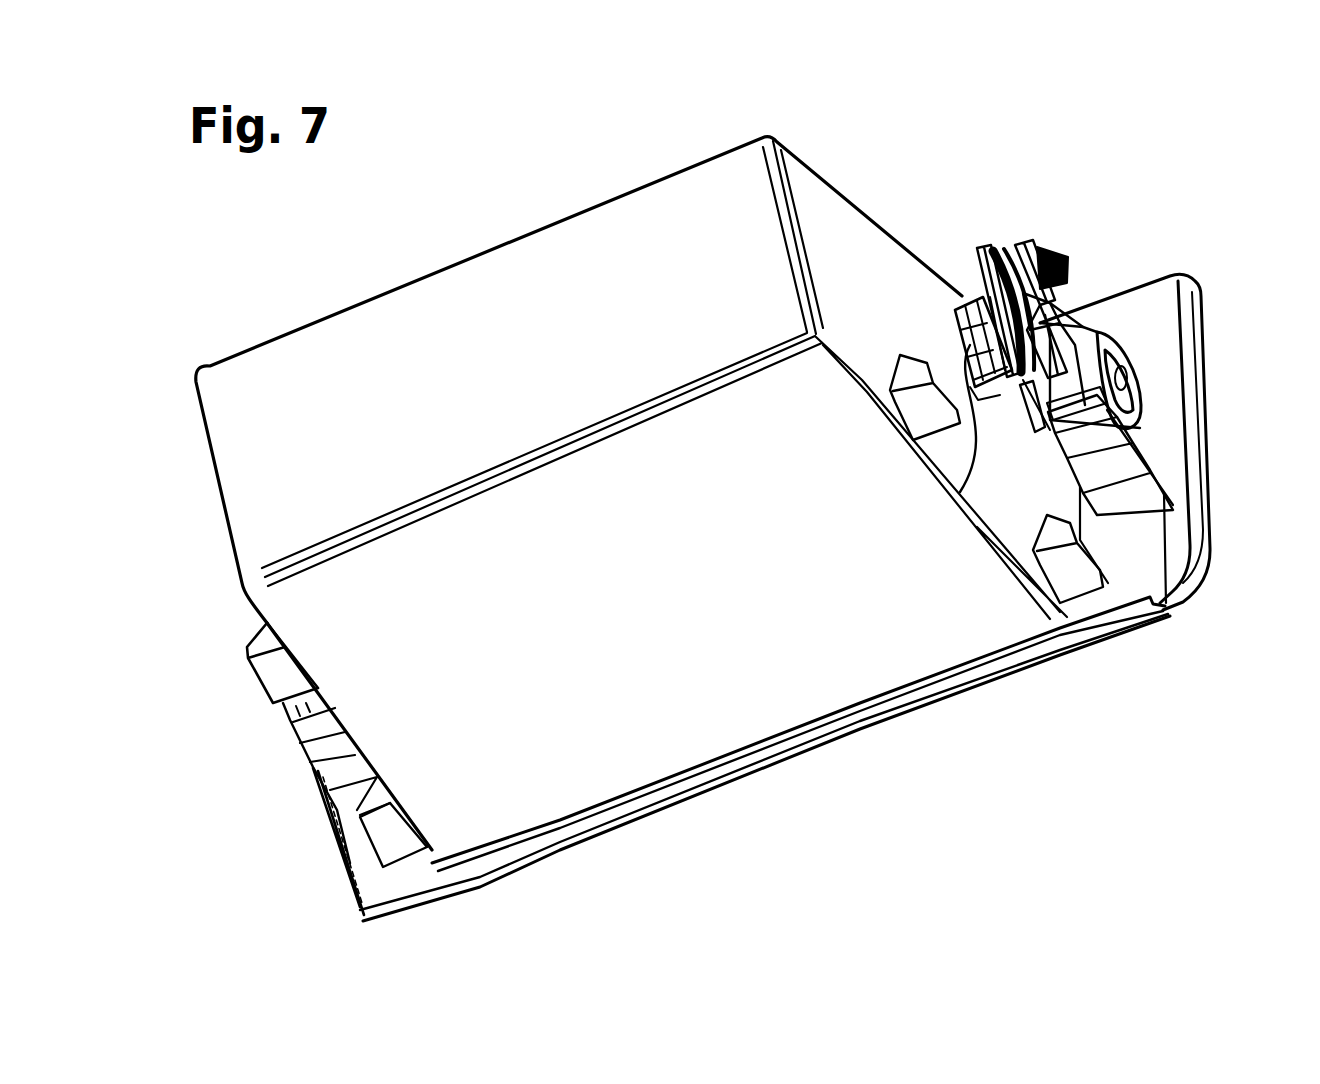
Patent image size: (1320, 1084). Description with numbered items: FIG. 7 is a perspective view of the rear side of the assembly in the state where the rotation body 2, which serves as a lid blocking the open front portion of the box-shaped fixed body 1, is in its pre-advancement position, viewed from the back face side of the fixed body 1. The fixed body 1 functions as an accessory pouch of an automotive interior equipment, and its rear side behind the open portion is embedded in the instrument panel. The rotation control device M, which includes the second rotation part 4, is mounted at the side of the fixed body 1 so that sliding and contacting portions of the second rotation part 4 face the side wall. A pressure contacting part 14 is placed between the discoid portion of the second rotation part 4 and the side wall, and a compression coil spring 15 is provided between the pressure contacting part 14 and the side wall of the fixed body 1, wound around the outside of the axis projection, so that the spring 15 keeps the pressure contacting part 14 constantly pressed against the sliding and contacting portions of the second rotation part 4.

The fixed body 1 is at (537, 280).
The rotation body 2 is at (1213, 413).
The second rotation part 4 is at (983, 250).
The pressure contacting part 14 is at (977, 303).
The compression coil spring 15 is at (963, 482).
The rotation control device M is at (250, 700).